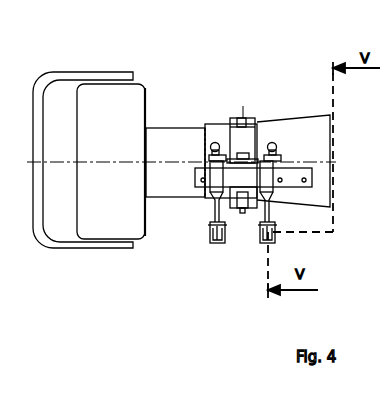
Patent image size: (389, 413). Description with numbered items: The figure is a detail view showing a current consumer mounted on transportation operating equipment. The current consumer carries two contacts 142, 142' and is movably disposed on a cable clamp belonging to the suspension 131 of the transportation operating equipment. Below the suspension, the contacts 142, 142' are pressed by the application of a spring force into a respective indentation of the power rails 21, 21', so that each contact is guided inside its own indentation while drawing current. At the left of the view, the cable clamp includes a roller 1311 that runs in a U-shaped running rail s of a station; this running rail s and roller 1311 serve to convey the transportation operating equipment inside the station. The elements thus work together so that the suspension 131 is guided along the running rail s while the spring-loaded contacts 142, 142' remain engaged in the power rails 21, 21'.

The U-shaped running rail s is at (73, 75).
The roller 1311 is at (137, 108).
The suspension 131 is at (172, 141).
The contact 142 is at (187, 202).
The contact 142' is at (305, 205).
The power rail 21 is at (193, 274).
The power rail 21' is at (242, 274).